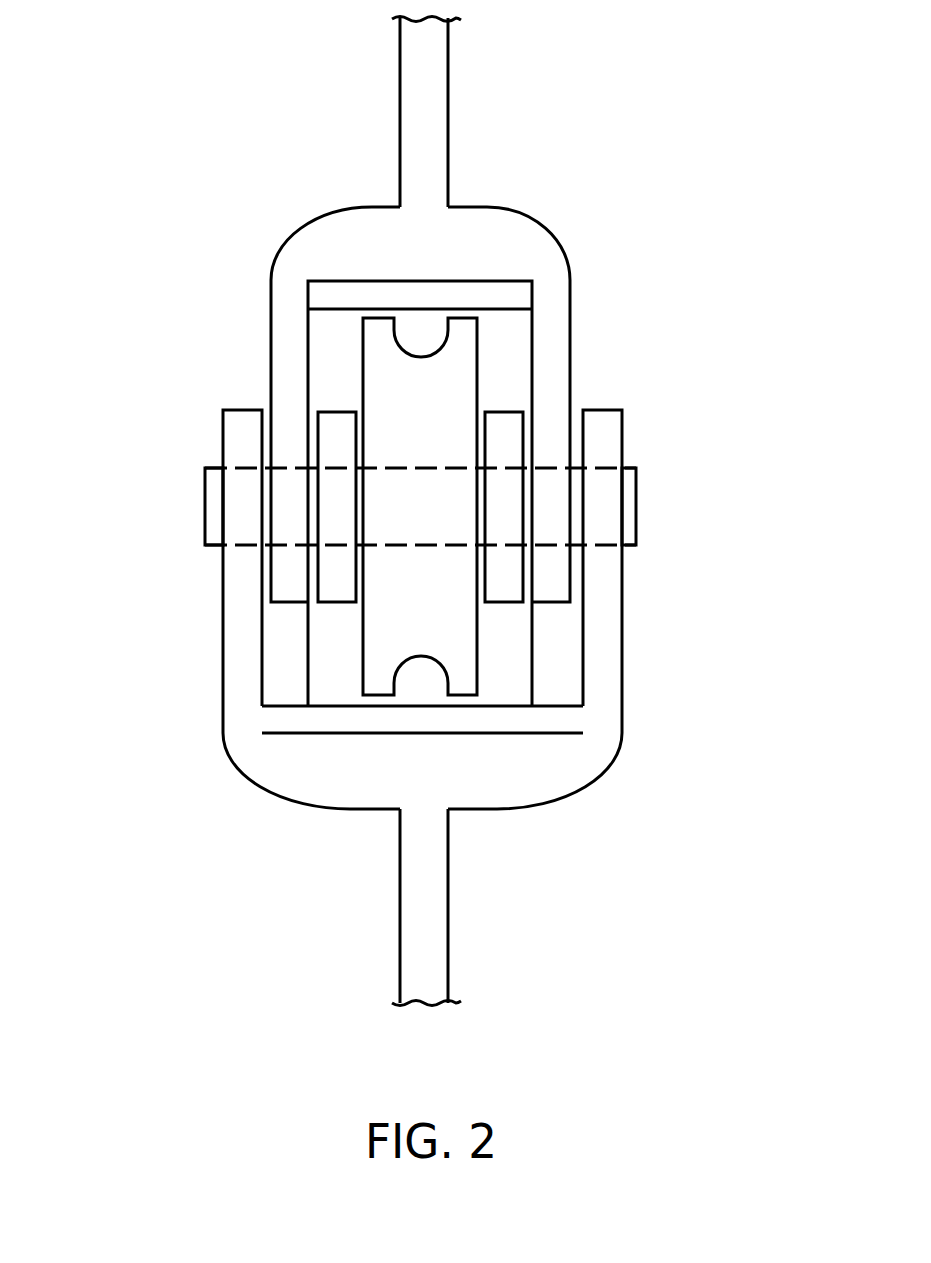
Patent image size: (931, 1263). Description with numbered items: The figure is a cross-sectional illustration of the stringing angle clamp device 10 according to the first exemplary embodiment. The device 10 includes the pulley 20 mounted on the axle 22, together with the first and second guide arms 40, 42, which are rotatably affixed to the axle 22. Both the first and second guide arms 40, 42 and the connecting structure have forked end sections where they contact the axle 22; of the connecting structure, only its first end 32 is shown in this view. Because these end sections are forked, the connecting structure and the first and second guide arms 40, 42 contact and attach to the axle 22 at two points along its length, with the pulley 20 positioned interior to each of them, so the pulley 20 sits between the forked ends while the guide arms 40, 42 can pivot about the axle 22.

The stringing angle clamp device 10 is at (668, 123).
The pulley 20 is at (438, 413).
The axle 22 is at (636, 503).
The first end 32 is at (337, 582).
The first guide arm 40 is at (429, 920).
The second guide arm 42 is at (428, 110).